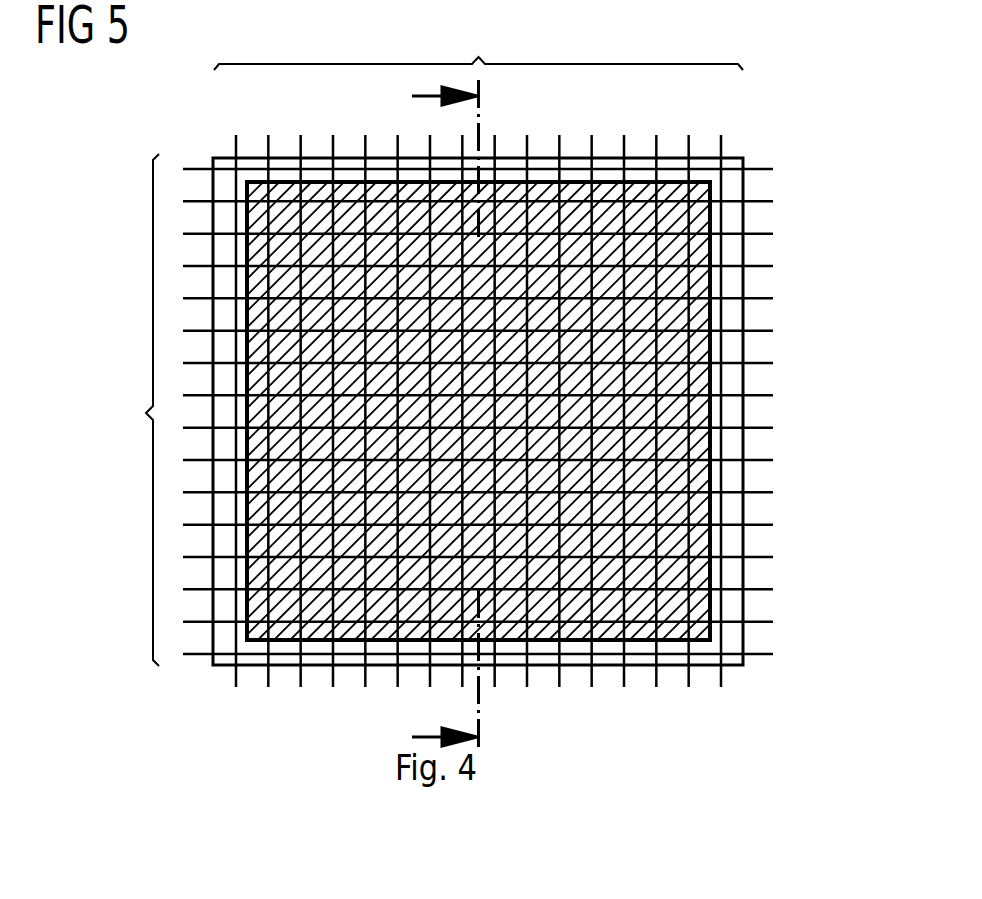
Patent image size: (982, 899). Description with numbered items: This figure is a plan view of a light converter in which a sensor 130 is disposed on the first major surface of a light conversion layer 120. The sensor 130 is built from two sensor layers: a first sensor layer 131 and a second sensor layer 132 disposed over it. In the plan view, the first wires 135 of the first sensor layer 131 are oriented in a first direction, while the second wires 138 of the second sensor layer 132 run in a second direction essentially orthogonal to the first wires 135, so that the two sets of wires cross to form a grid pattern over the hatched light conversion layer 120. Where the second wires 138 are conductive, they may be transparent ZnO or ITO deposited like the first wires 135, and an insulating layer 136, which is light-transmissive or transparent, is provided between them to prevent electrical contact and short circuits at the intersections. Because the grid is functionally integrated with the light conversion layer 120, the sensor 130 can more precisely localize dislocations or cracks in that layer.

The sensor 130 is at (100, 175).
The first sensor layer 131 is at (129, 410).
The second sensor layer 132 is at (478, 45).
The first wires 135 is at (758, 394).
The insulating layer 136 is at (733, 157).
The second wires 138 is at (625, 676).
The light conversion layer 120 is at (709, 256).